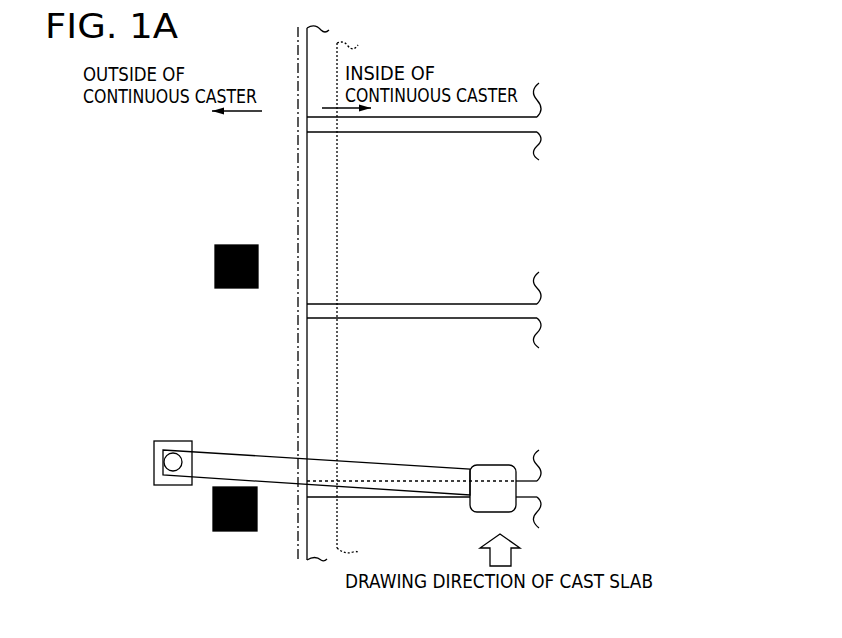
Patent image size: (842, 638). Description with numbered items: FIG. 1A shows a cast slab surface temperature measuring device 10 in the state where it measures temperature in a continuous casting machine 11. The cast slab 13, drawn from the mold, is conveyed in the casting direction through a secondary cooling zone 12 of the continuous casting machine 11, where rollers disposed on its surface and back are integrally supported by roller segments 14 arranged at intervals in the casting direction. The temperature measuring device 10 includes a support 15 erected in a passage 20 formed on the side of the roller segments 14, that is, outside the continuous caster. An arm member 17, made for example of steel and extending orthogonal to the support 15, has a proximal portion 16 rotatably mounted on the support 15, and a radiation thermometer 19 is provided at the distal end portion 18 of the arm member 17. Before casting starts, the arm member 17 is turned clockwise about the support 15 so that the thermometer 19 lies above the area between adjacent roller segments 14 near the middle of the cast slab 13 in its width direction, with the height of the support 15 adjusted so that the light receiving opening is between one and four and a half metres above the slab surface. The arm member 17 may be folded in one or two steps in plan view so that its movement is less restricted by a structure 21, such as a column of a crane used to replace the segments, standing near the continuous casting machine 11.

The cast slab surface temperature measuring device 10 is at (315, 462).
The continuous casting machine 11 is at (524, 41).
The secondary cooling zone 12 is at (552, 131).
The cast slab 13 is at (510, 211).
The roller segments 14 is at (510, 258).
The support 15 is at (170, 487).
The proximal portion 16 is at (181, 449).
The arm member 17 is at (250, 432).
The distal end portion 18 is at (470, 506).
The radiation thermometer 19 is at (490, 464).
The passage 20 is at (200, 316).
The structure 21 is at (233, 245).